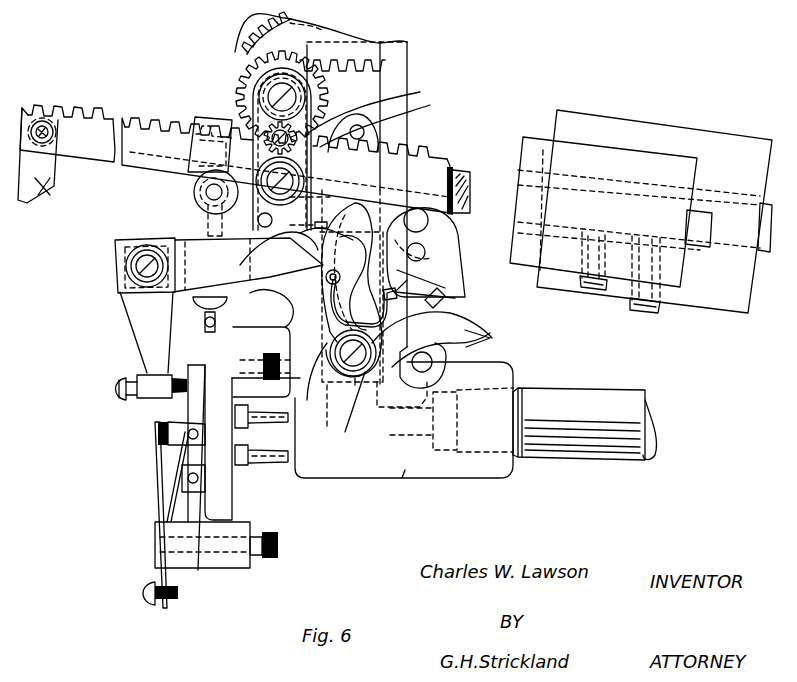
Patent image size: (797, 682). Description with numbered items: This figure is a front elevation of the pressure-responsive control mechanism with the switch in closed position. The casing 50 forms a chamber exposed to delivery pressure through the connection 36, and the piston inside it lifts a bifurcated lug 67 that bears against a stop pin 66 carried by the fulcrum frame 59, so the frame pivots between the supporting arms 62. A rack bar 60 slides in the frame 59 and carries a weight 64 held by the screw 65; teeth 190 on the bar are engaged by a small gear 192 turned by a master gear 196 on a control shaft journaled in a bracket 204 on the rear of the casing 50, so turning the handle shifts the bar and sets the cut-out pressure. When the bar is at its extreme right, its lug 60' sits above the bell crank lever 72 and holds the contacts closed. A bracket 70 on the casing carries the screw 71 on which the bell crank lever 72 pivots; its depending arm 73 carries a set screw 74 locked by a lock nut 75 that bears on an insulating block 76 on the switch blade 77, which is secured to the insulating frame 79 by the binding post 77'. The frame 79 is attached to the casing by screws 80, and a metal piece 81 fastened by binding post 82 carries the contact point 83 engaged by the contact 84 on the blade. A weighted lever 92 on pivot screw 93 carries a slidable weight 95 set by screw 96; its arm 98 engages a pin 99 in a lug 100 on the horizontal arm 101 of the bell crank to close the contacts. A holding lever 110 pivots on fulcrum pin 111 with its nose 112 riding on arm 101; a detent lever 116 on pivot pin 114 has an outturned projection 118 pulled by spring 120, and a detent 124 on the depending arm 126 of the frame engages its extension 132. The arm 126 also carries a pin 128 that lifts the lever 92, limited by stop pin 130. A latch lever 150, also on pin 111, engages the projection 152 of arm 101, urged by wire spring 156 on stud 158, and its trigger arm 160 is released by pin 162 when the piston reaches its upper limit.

The connection 36 is at (565, 398).
The casing 50 is at (402, 478).
The fulcrum frame 59 is at (318, 140).
The rack bar 60 is at (303, 164).
The lug 60' is at (54, 162).
The supporting arms 62 is at (263, 72).
The weight 64 is at (588, 125).
The screw 65 is at (640, 308).
The stop pin 66 is at (362, 125).
The bifurcated lug 67 is at (364, 133).
The bracket 70 is at (262, 296).
The screw 71 is at (137, 262).
The bell crank lever 72 is at (116, 244).
The depending arm 73 is at (145, 318).
The set screw 74 is at (118, 386).
The lock nut 75 is at (150, 400).
The insulating block 76 is at (185, 398).
The switch blade 77 is at (200, 477).
The binding post 77' is at (176, 598).
The insulating frame 79 is at (232, 568).
The screws 80 is at (275, 462).
The metal piece 81 is at (250, 348).
The binding post 82 is at (230, 375).
The contact point 83 is at (222, 303).
The contact 84 is at (208, 318).
The lever 92 is at (467, 188).
The pivot screw 93 is at (266, 142).
The slidable weight 95 is at (533, 148).
The set screw 96 is at (586, 284).
The arm 98 is at (247, 230).
The pin 99 is at (205, 192).
The lug 100 is at (210, 196).
The horizontal arm 101 is at (210, 236).
The holding lever 110 is at (345, 300).
The fulcrum pin 111 is at (355, 385).
The nose 112 is at (318, 248).
The pivot pin 114 is at (440, 258).
The detent lever 116 is at (435, 270).
The outturned projection 118 is at (465, 320).
The spring 120 is at (380, 378).
The detent 124 is at (450, 300).
The depending arm 126 is at (425, 252).
The pin 128 is at (430, 225).
The stop pin 130 is at (262, 230).
The extension 132 is at (447, 296).
The latch lever 150 is at (327, 370).
The projection 152 is at (360, 240).
The wire spring 156 is at (328, 285).
The stud 158 is at (330, 283).
The trigger arm 160 is at (480, 342).
The pin 162 is at (435, 370).
The teeth 190 is at (84, 104).
The small gear 192 is at (254, 92).
The master gear 196 is at (262, 17).
The bracket 204 is at (407, 58).